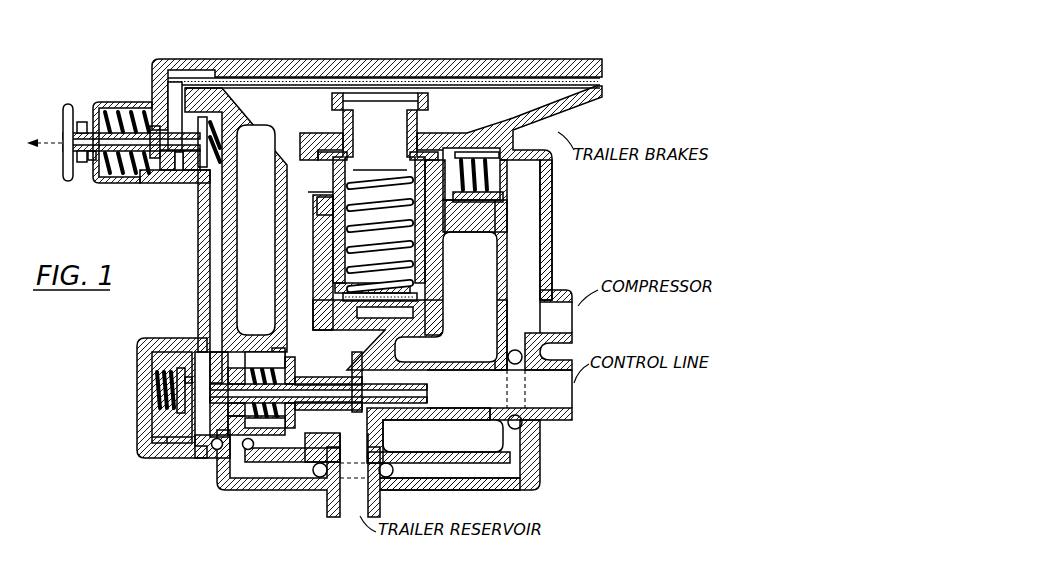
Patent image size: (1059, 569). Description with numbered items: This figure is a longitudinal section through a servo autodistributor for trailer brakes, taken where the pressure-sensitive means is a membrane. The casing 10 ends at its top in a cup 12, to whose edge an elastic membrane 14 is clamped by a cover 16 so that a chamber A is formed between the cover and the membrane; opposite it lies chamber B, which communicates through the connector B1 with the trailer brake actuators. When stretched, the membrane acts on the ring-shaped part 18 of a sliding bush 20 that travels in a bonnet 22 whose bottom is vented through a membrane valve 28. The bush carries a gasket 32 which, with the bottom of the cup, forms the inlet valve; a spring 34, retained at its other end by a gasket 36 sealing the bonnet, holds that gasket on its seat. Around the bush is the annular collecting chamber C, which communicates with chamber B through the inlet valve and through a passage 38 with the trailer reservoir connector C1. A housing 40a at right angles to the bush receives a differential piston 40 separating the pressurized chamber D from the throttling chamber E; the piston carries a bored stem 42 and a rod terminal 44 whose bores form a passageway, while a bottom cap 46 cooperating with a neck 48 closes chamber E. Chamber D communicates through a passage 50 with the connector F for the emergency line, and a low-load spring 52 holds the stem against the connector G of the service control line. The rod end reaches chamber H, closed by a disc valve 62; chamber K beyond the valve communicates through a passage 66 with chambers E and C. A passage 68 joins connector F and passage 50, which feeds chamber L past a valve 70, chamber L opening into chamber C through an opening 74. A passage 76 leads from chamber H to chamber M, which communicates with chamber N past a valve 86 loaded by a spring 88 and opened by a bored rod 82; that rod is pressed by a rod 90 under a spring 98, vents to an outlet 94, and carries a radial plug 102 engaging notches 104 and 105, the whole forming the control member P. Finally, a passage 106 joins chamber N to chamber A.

The casing 10 is at (569, 270).
The cup 12 is at (598, 98).
The elastic membrane 14 is at (305, 63).
The cover 16 is at (243, 62).
The ring-shaped part 18 is at (430, 90).
The sliding bush 20 is at (440, 282).
The guide member or bonnet 22 is at (440, 305).
The membrane valve 28 is at (405, 315).
The gasket 32 is at (450, 170).
The spring 34 is at (440, 258).
The gasket 36 is at (314, 215).
The passage 38 is at (283, 272).
The piston 40 is at (283, 296).
The housing 40a is at (272, 348).
The bored stem 42 is at (320, 377).
The rod terminal 44 is at (213, 402).
The bottom cap 46 is at (394, 350).
The neck 48 is at (371, 327).
The passage 50 is at (274, 476).
The low-load spring 52 is at (258, 418).
The disc valve 62 is at (172, 372).
The passage 66 is at (163, 447).
The passage 68 is at (553, 223).
The valve 70 is at (502, 167).
The opening 74 is at (470, 152).
The passage 76 is at (205, 248).
The bored rod 82 is at (181, 100).
The valve 86 is at (196, 190).
The spring 88 is at (220, 120).
The rod 90 is at (128, 176).
The outlet 94 is at (70, 144).
The spring 98 is at (127, 118).
The radial plug 102 is at (92, 162).
The notch 104 is at (81, 164).
The notch 105 is at (83, 121).
The passage 106 is at (156, 98).
The chamber A is at (482, 80).
The chamber B is at (535, 102).
The connector B1 is at (530, 124).
The annular collecting chamber C is at (300, 192).
The trailer reservoir connector C1 is at (351, 516).
The pressurized chamber D is at (202, 360).
The throttling chamber E is at (323, 425).
The connector F is at (573, 320).
The connector G is at (573, 397).
The chamber H is at (223, 425).
The chamber K is at (152, 398).
The chamber L is at (477, 205).
The chamber M is at (232, 160).
The chamber N is at (176, 172).
The control member P is at (62, 176).